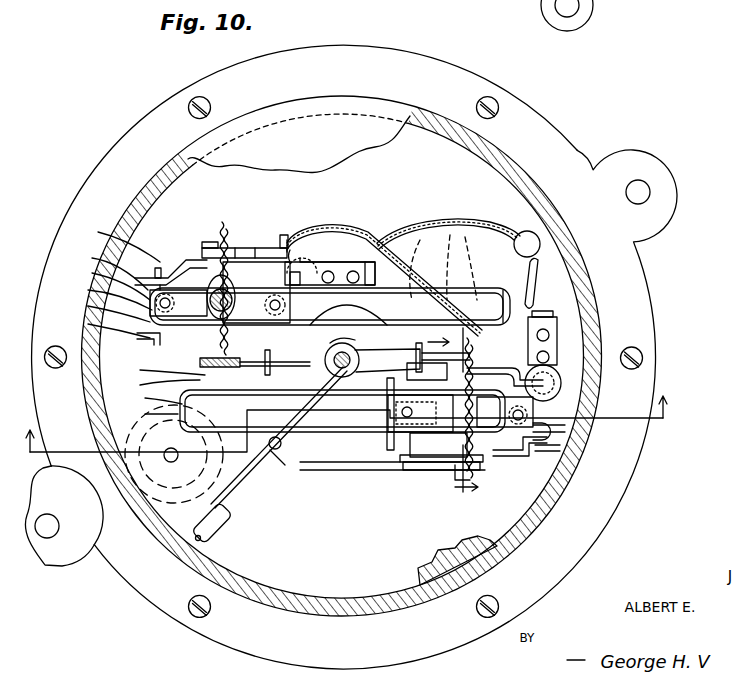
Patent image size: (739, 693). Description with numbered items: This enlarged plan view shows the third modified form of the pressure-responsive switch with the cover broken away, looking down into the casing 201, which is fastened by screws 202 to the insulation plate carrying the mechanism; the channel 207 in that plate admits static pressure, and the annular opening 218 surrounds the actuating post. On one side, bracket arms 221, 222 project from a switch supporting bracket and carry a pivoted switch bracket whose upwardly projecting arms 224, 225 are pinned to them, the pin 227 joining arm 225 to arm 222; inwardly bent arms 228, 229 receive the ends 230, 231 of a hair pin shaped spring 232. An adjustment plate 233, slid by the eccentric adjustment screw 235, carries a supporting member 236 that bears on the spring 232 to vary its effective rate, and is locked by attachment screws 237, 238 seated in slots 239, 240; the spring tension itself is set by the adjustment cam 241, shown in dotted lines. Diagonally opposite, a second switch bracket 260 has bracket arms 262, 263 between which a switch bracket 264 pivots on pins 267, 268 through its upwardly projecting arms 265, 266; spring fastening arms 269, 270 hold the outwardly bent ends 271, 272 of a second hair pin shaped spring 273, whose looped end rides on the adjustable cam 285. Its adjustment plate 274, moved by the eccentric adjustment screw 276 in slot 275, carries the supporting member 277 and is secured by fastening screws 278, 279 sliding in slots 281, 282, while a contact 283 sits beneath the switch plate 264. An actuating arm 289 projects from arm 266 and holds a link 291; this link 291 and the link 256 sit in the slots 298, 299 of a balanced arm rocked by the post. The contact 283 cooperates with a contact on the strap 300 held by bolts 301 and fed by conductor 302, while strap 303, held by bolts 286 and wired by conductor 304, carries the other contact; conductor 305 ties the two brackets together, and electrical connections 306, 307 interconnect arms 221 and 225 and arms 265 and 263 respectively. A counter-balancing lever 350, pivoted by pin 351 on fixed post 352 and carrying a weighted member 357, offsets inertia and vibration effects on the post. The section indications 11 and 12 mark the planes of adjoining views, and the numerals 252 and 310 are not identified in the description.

The casing 201 is at (612, 382).
The screws 202 is at (496, 105).
The mounting lug 310 is at (540, 268).
The end of hair pin shaped spring 230 is at (570, 330).
The section line 11- 11 is at (347, 436).
The section line 12- 12 is at (453, 410).
The annular opening 218 is at (372, 314).
The bracket arm 221 is at (410, 342).
The hair pin shaped spring 273 is at (410, 292).
The strap 300 is at (332, 268).
The bolts 301 is at (356, 270).
The fastening screw 279 is at (342, 266).
The conductor 305 is at (313, 240).
The contact 283 is at (312, 251).
The electrical conductor 302 is at (466, 222).
The adjustable cam 285 is at (443, 266).
The conductor 304 is at (545, 275).
The strap 303 is at (560, 306).
The electrical connection 306 is at (535, 365).
The bolts 286 is at (566, 318).
The terminal hole 252 is at (575, 350).
The inwardly bent arm 228 is at (563, 388).
The upwardly projecting arm 224 is at (490, 360).
The end of hair pin shaped spring 231 is at (585, 478).
The slot 239 is at (421, 412).
The attachment screw 237 is at (438, 445).
The supporting member 236 is at (386, 440).
The eccentric adjustment screw 235 is at (512, 415).
The slot 240 is at (500, 457).
The inwardly bent arm 229 is at (562, 448).
The attachment screw 238 is at (567, 428).
The upwardly projecting arm 225 is at (400, 462).
The bracket arm 222 is at (420, 472).
The pin 227 is at (482, 470).
The adjustment plate 233 is at (395, 465).
The slot 282 is at (326, 358).
The slot 298 is at (352, 350).
The link 256 is at (412, 368).
The slot 299 is at (438, 367).
The supporting member 277 is at (372, 308).
The slot 275 is at (178, 306).
The pin 267 is at (240, 248).
The adjustment plate 274 is at (247, 248).
The second switch bracket 260 is at (283, 235).
The bracket arm 262 is at (208, 244).
The eccentric adjustment screw 276 is at (221, 232).
The pin 268 is at (214, 350).
The slot 281 is at (182, 266).
The upwardly projecting arm 265 is at (198, 260).
The outwardly bent end of hair pin shaped spring 271 is at (113, 243).
The spring fastening arm 269 is at (102, 269).
The fastening screw 278 is at (103, 282).
The switch bracket 264 is at (101, 295).
The spring fastening arm 270 is at (100, 310).
The outwardly bent end of hair pin shaped spring 272 is at (100, 327).
The electrical connection 307 is at (195, 363).
The upwardly projecting arm 266 is at (156, 370).
The bracket arm 263 is at (154, 385).
The hair pin shaped spring 232 is at (148, 397).
The adjustment cam 241 is at (146, 414).
The actuating arm 289 is at (265, 362).
The link 291 is at (258, 368).
The second channel 207 is at (177, 451).
The counter-balancing lever 350 is at (248, 490).
The weighted member 357 is at (226, 533).
The pin 351 is at (280, 450).
The fixed post 352 is at (285, 470).